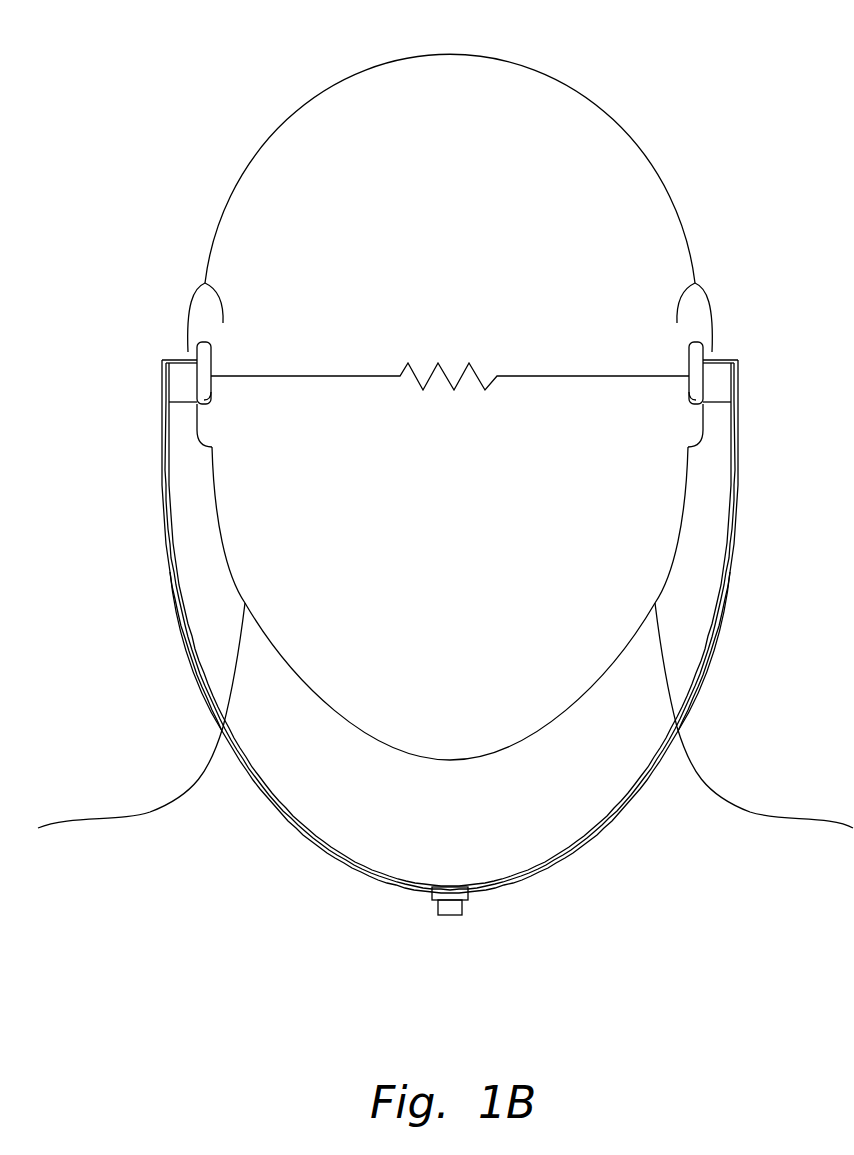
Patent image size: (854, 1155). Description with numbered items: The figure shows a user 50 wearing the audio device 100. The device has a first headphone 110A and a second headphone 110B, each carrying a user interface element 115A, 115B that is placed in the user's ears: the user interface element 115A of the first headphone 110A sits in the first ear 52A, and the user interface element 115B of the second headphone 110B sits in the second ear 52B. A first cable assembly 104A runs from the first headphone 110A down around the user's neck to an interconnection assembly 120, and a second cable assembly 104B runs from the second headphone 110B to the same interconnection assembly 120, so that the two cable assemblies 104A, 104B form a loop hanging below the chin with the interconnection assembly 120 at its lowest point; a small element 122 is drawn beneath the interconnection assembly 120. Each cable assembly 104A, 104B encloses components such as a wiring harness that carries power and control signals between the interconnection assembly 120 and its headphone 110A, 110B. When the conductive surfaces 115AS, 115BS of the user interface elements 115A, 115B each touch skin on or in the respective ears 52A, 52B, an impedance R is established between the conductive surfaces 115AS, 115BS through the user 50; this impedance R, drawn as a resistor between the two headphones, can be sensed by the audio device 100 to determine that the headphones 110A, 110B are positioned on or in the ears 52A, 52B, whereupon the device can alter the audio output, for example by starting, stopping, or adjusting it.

The user 50 is at (678, 36).
The first ear 52A is at (176, 275).
The second ear 52B is at (725, 275).
The audio device 100 is at (287, 873).
The first cable assembly 104A is at (177, 648).
The second cable assembly 104B is at (725, 648).
The first headphone 110A is at (173, 344).
The second headphone 110B is at (729, 346).
The user interface element 115A is at (213, 347).
The user interface element 115B is at (689, 347).
The conductive surface 115AS is at (213, 404).
The conductive surface 115BS is at (688, 404).
The impedance R is at (450, 359).
The interconnection assembly 120 is at (450, 872).
The connector 122 is at (448, 917).